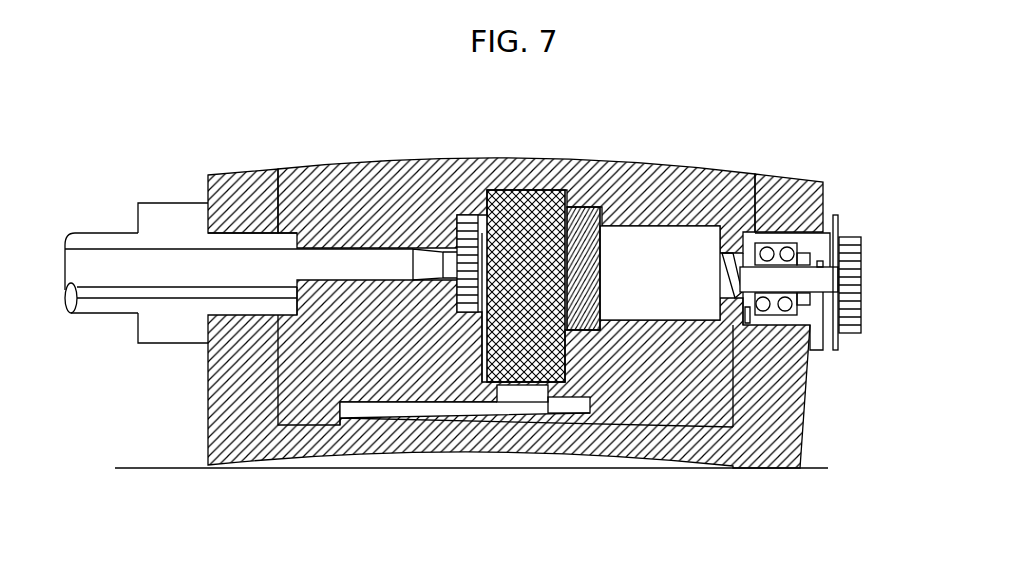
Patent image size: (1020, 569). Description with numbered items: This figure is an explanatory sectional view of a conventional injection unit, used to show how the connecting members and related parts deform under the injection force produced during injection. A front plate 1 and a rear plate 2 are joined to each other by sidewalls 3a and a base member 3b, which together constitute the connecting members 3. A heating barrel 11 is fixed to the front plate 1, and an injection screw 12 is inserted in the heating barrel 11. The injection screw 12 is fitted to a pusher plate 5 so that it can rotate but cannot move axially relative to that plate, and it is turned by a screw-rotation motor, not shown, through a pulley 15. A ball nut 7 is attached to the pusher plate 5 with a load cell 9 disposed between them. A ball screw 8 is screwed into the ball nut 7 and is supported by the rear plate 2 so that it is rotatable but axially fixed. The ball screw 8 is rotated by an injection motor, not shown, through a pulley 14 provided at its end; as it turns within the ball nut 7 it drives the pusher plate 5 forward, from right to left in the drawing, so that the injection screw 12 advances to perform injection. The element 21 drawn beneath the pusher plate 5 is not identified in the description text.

The front plate 1 is at (240, 198).
The rear plate 2 is at (815, 182).
The connecting members 3 is at (509, 314).
The sidewalls 3a is at (563, 168).
The base member 3b is at (610, 443).
The pusher plate 5 is at (520, 190).
The ball nut 7 is at (652, 227).
The ball screw 8 is at (742, 250).
The load cell 9 is at (588, 207).
The heating barrel 11 is at (110, 236).
The injection screw 12 is at (97, 276).
The pulley 14 is at (847, 335).
The pulley 15 is at (457, 214).
The stator base 21 is at (497, 407).